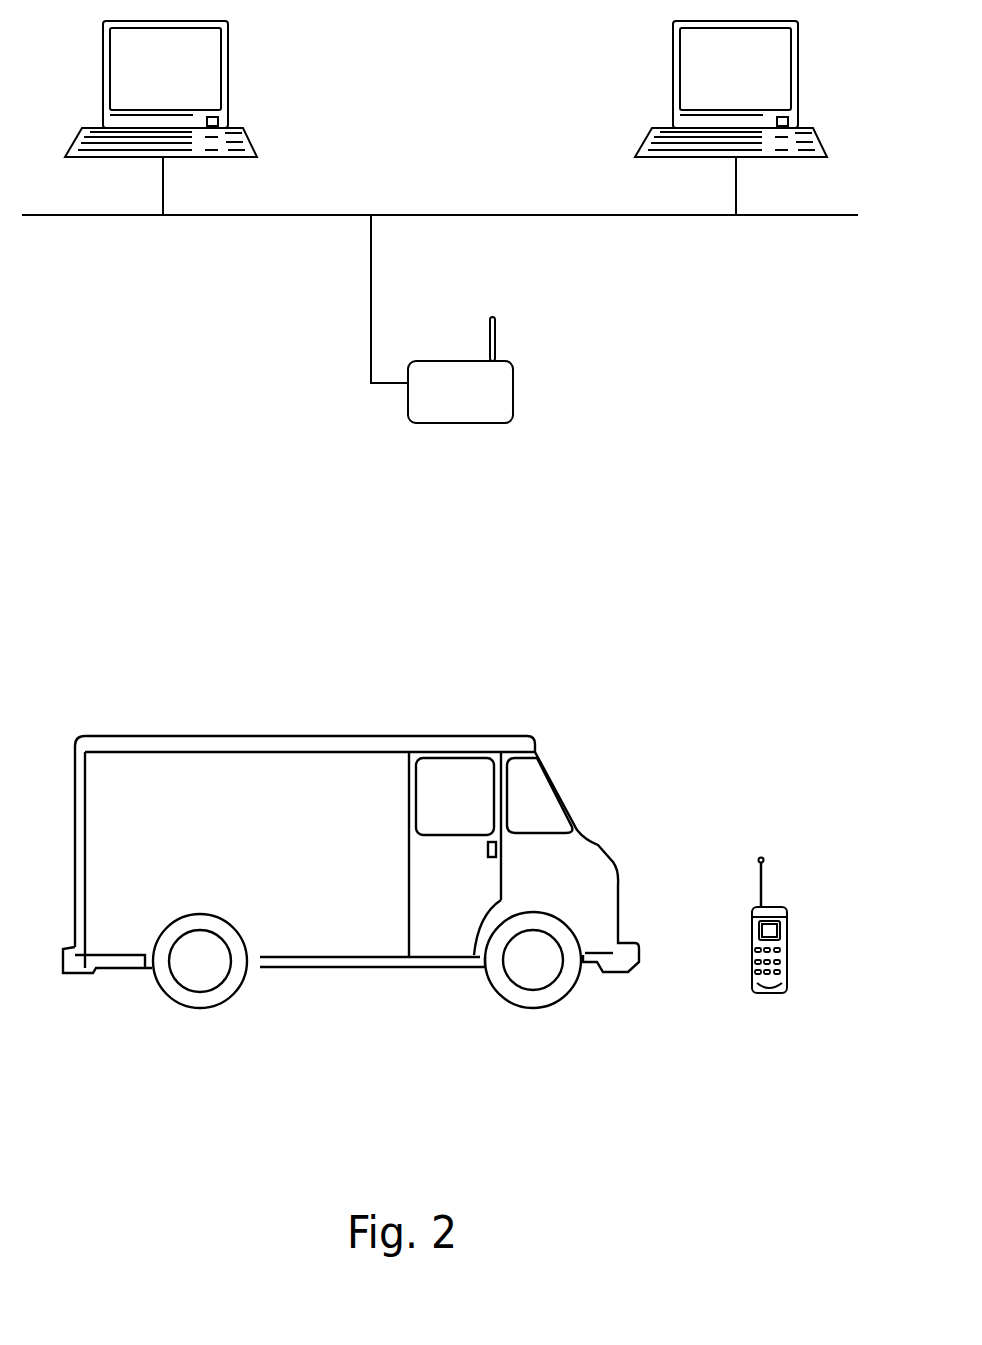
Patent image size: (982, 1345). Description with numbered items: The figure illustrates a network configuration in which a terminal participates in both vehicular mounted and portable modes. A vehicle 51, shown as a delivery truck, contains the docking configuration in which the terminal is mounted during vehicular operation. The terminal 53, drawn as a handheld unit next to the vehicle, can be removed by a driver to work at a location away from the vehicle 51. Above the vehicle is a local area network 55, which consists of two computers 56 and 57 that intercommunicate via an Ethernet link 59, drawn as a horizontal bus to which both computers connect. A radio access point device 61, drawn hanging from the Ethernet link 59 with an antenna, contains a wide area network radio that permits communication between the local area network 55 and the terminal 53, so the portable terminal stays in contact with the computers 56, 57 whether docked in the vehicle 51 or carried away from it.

The vehicle 51 is at (350, 699).
The terminal 53 is at (750, 835).
The local area network 55 is at (150, 386).
The computer 56 is at (228, 128).
The computer 57 is at (798, 128).
The Ethernet link 59 is at (560, 215).
The radio access point device 61 is at (513, 388).